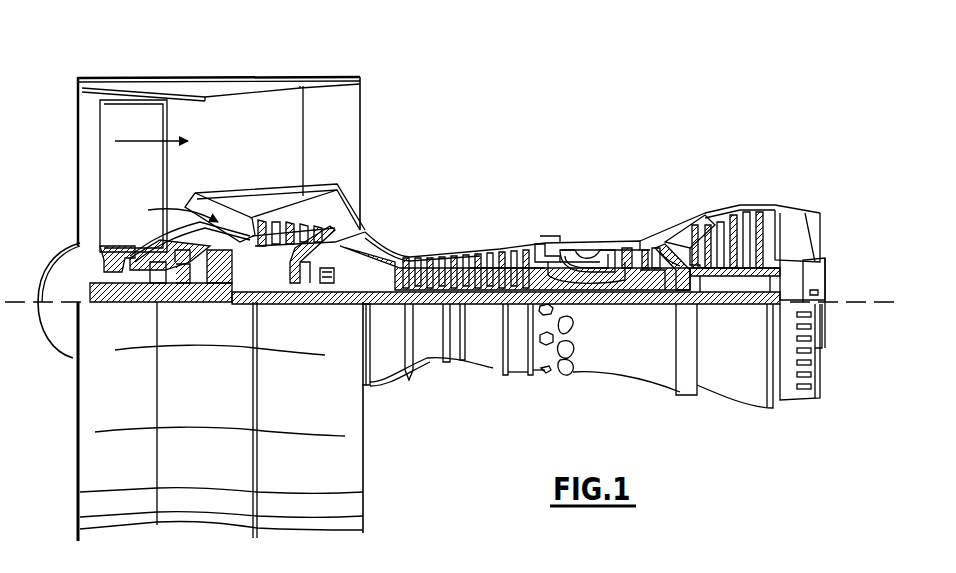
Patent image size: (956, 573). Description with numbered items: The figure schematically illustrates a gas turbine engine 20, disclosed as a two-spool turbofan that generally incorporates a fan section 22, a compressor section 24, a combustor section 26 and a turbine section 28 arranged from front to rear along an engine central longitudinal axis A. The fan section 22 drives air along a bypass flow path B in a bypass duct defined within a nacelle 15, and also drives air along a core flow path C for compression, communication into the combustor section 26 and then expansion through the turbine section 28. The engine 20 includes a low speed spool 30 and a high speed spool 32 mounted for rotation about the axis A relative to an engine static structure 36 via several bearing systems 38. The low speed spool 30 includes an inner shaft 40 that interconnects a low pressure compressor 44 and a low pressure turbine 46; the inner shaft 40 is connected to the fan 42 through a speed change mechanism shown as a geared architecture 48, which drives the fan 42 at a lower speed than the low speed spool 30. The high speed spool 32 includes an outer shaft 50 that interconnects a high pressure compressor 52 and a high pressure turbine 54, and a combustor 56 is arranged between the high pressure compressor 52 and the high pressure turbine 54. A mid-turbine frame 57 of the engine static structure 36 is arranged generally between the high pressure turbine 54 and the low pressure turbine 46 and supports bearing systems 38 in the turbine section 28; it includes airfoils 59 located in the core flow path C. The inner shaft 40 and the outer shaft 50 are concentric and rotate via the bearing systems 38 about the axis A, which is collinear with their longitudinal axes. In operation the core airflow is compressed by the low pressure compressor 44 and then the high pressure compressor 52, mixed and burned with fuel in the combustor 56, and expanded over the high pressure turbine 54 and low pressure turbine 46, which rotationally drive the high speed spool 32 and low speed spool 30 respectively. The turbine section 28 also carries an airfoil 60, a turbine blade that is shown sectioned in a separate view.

The gas turbine engine 20 is at (582, 122).
The fan section 22 is at (200, 281).
The compressor section 24 is at (398, 233).
The combustor section 26 is at (597, 230).
The turbine section 28 is at (757, 241).
The nacelle 15 is at (222, 80).
The bypass flow path B is at (142, 141).
The core flow path C is at (170, 212).
The engine central longitudinal axis A is at (893, 302).
The low speed spool 30 is at (486, 306).
The high speed spool 32 is at (520, 250).
The engine static structure 36 is at (517, 376).
The bearing systems 38 is at (331, 303).
The inner shaft 40 is at (380, 360).
The fan 42 is at (150, 184).
The low pressure compressor 44 is at (362, 188).
The low pressure turbine 46 is at (728, 210).
The geared architecture 48 is at (226, 303).
The outer shaft 50 is at (580, 306).
The high pressure compressor 52 is at (467, 255).
The high pressure turbine 54 is at (628, 250).
The combustor 56 is at (578, 248).
The mid-turbine frame 57 is at (712, 229).
The airfoils 59 is at (688, 282).
The airfoil 60 is at (695, 225).